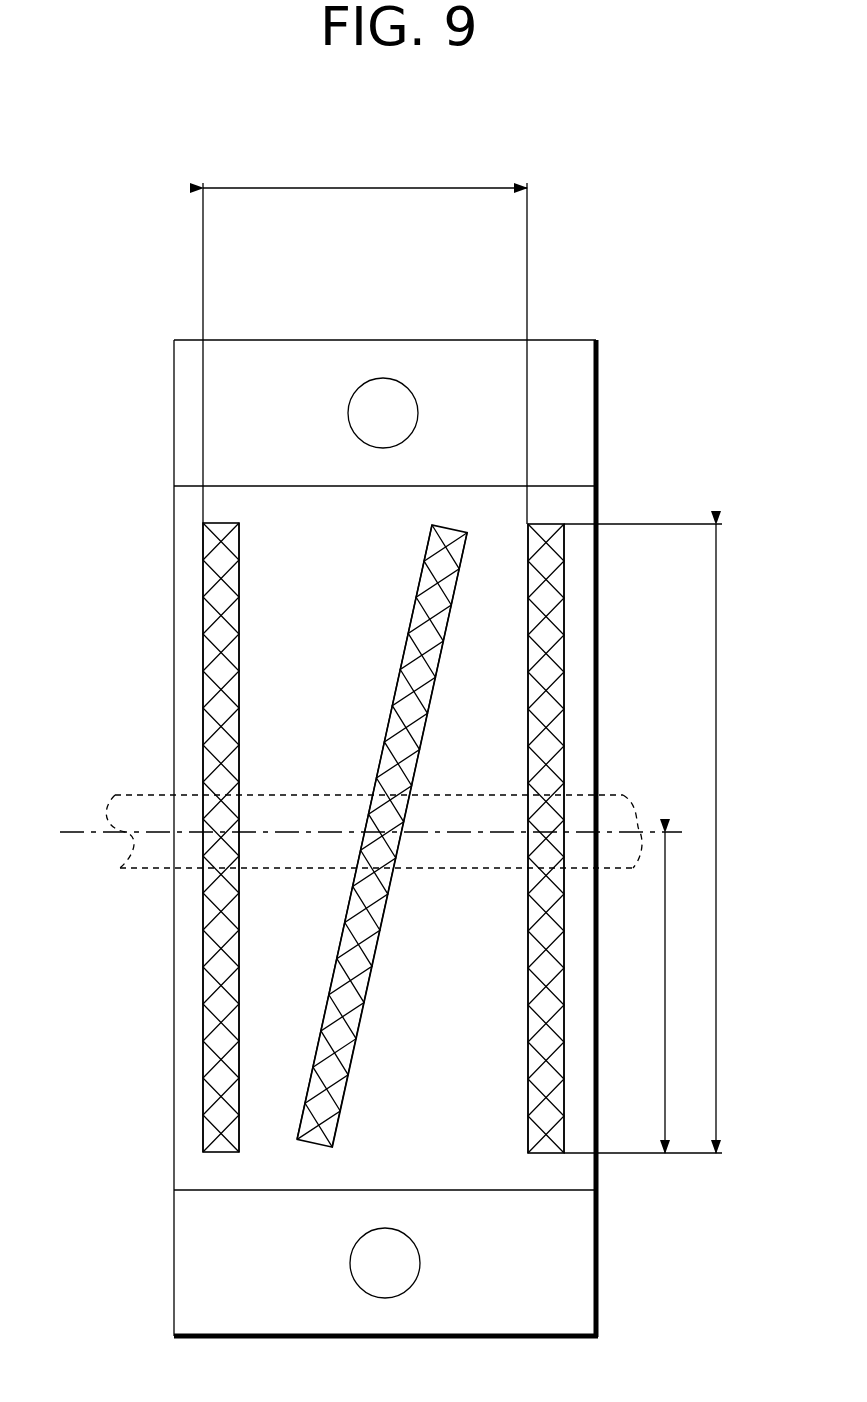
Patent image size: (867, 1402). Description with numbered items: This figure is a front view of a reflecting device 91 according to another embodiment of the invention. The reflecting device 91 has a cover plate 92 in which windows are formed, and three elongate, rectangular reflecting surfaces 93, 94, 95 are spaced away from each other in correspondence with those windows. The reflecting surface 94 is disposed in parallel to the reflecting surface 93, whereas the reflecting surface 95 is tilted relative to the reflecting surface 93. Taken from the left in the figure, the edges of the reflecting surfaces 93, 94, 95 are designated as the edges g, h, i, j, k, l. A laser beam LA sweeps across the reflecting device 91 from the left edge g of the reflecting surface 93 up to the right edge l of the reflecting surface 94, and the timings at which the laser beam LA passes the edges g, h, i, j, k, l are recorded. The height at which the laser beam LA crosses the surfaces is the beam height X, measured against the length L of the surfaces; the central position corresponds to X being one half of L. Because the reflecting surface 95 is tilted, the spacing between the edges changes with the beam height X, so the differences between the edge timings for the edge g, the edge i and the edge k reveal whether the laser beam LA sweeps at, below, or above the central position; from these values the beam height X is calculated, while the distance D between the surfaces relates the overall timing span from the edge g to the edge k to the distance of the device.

The reflecting device 91 is at (182, 410).
The cover plate 92 is at (182, 1145).
The reflecting surface 93 is at (205, 577).
The reflecting surface 94 is at (448, 527).
The reflecting surface 95 is at (546, 524).
The left edge of reflecting surface 93 g is at (203, 983).
The edge of reflecting surface h is at (240, 956).
The edge of reflecting surface i is at (323, 1012).
The edge of reflecting surface j is at (375, 960).
The edge of reflecting surface k is at (528, 1012).
The right edge of reflecting surface 94 l is at (565, 1105).
The distance between strips D is at (365, 337).
The length of reflecting surface L is at (643, 838).
The beam height X is at (647, 992).
The laser beam LA is at (120, 858).